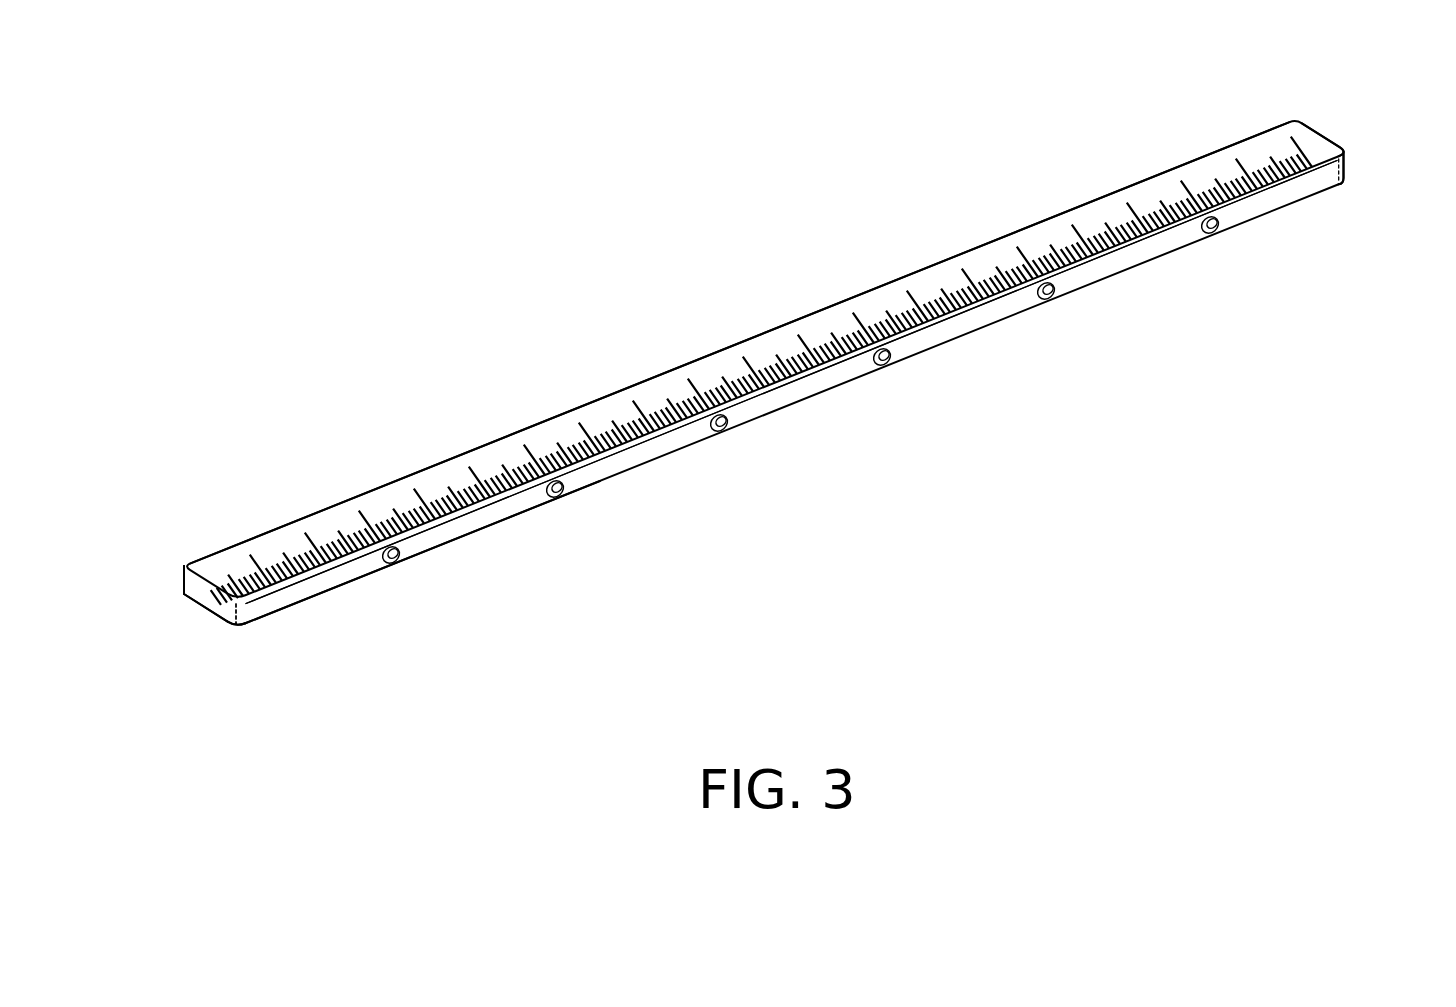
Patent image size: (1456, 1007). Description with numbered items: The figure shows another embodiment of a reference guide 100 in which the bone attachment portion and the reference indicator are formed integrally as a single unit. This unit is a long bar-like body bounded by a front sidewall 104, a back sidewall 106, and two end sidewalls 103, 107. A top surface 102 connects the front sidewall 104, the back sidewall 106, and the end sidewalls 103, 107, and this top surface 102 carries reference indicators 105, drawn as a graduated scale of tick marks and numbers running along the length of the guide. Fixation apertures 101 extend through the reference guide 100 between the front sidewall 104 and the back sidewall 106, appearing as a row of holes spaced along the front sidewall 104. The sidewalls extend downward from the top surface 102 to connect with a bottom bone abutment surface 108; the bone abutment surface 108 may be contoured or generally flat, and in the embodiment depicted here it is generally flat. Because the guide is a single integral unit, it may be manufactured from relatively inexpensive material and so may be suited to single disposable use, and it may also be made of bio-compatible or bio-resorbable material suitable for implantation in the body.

The reference guide 100 is at (534, 232).
The fixation apertures 101 is at (396, 569).
The top surface 102 is at (200, 567).
The end sidewall 103 is at (205, 597).
The front sidewall 104 is at (263, 610).
The reference indicators 105 is at (223, 604).
The back sidewall 106 is at (184, 578).
The end sidewall 107 is at (1322, 137).
The bone abutment surface 108 is at (532, 515).